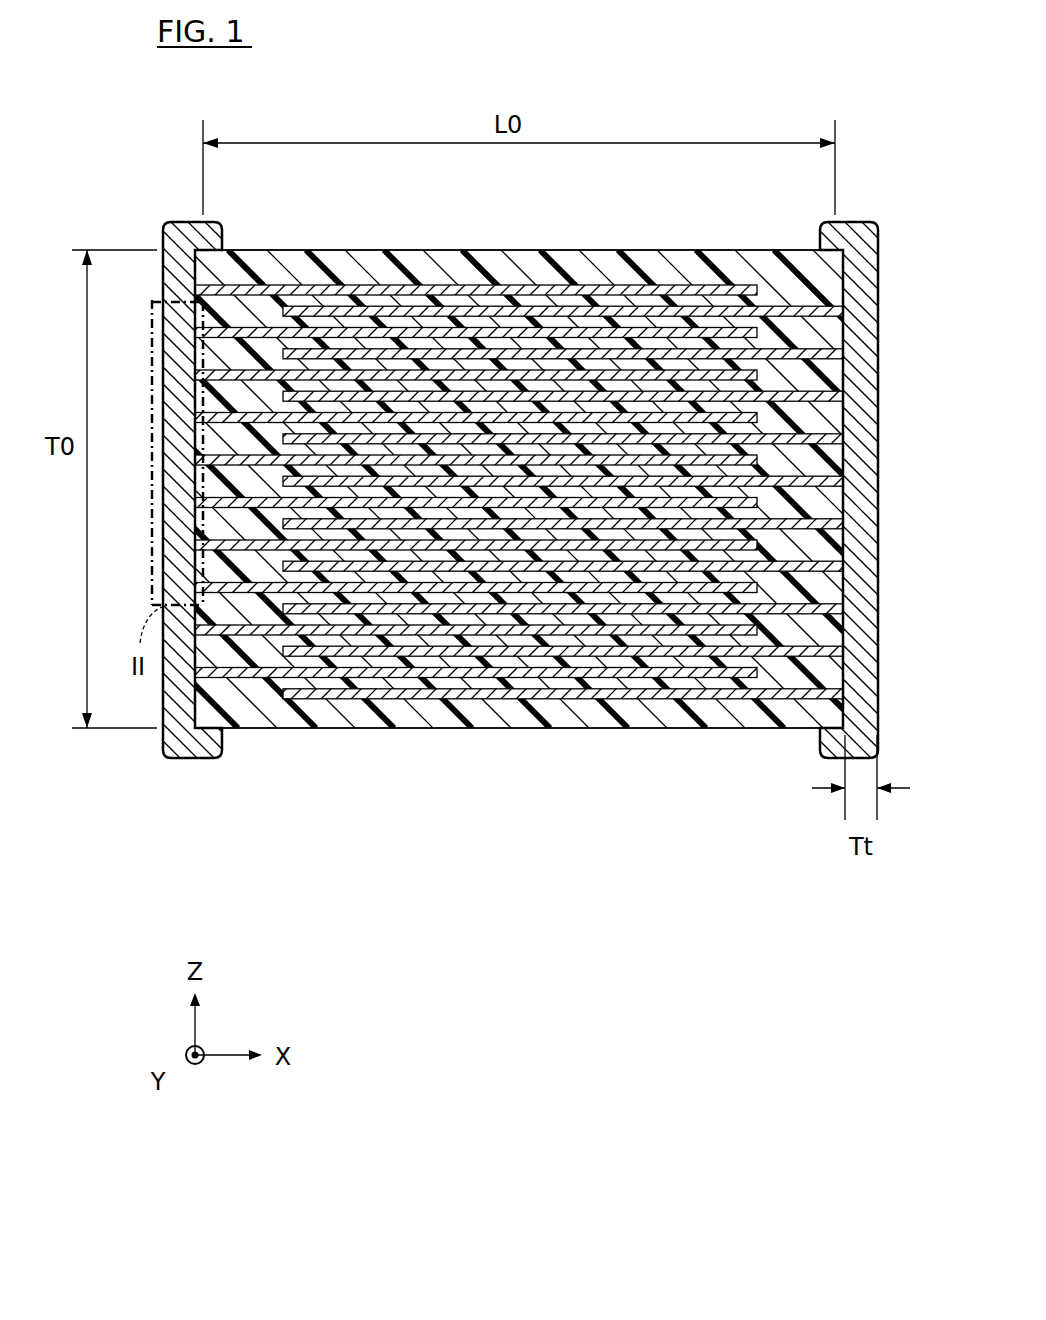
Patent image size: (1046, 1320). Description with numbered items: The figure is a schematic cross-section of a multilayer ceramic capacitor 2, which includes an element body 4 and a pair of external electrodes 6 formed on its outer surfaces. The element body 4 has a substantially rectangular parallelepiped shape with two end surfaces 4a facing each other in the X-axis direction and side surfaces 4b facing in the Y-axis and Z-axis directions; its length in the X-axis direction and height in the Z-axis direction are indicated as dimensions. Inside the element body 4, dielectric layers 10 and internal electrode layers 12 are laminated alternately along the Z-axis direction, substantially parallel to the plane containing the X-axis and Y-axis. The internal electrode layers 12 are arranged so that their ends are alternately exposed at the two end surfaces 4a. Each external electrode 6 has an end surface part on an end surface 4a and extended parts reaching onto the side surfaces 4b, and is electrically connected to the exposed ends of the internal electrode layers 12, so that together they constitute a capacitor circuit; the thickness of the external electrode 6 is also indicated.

The multilayer ceramic capacitor 2 is at (523, 512).
The element body 4 is at (523, 494).
The end surface 4a is at (195, 395).
The side surface 4b is at (692, 250).
The external electrode 6 is at (845, 222).
The dielectric layer 10 is at (412, 292).
The internal electrode layer 12 is at (607, 288).